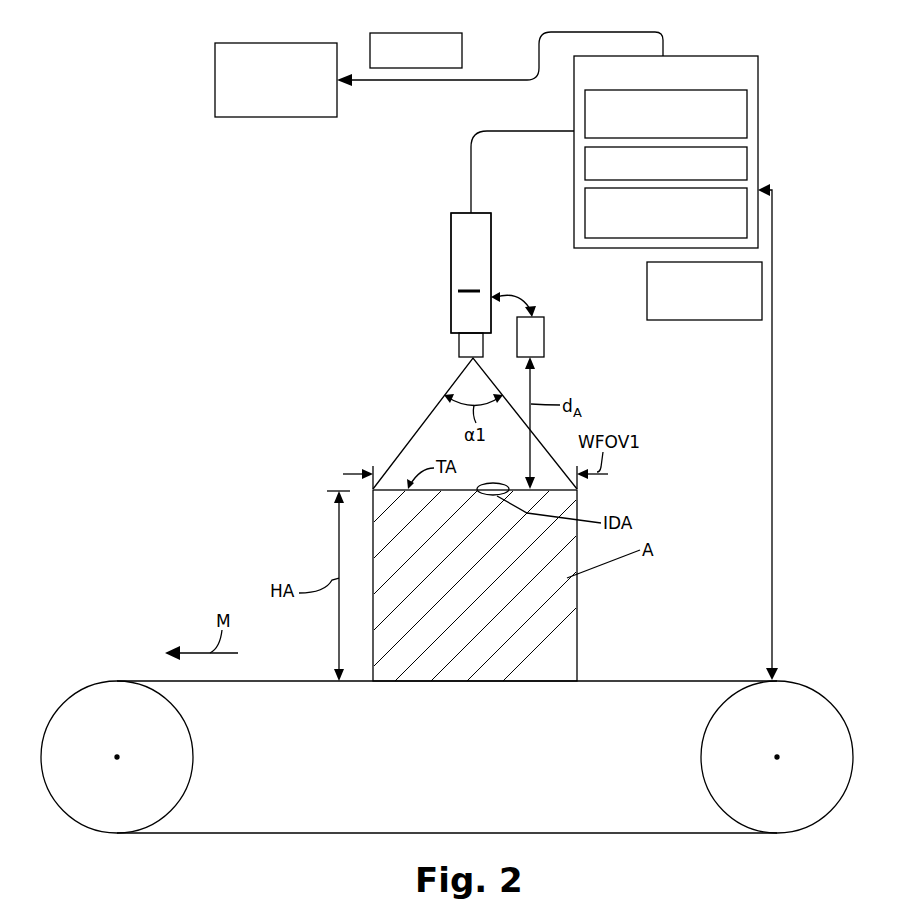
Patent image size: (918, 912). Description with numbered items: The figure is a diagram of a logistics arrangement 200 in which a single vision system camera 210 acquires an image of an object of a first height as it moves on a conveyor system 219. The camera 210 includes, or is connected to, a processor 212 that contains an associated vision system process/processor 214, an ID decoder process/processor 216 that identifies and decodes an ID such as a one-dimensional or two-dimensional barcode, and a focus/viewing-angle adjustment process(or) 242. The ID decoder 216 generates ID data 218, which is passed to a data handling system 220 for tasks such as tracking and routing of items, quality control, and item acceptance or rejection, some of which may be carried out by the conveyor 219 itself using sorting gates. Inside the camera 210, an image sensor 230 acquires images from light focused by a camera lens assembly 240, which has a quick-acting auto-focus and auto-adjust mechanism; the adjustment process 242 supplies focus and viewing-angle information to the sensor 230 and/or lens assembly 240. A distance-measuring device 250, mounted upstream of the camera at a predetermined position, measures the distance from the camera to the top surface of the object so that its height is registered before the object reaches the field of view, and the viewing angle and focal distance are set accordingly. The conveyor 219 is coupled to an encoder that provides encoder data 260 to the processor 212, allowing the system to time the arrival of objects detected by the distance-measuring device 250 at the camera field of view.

The logistics arrangement 200 is at (362, 254).
The vision system camera 210 is at (487, 272).
The processor 212 is at (719, 56).
The vision system process/processor 214 is at (585, 108).
The ID decoder process/processor 216 is at (585, 165).
The ID data 218 is at (462, 54).
The conveyor system 219 is at (636, 674).
The data handling system 220 is at (272, 117).
The image sensor 230 is at (458, 297).
The camera lens assembly 240 is at (459, 345).
The focus/viewing-angle adjustment process(or) 242 is at (585, 212).
The distance-measuring device 250 is at (544, 340).
The encoder data 260 is at (683, 320).